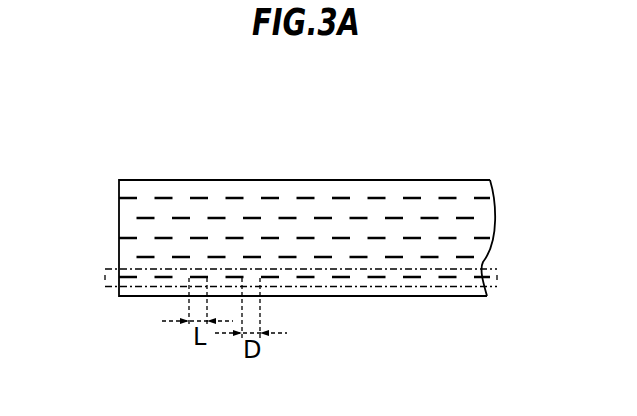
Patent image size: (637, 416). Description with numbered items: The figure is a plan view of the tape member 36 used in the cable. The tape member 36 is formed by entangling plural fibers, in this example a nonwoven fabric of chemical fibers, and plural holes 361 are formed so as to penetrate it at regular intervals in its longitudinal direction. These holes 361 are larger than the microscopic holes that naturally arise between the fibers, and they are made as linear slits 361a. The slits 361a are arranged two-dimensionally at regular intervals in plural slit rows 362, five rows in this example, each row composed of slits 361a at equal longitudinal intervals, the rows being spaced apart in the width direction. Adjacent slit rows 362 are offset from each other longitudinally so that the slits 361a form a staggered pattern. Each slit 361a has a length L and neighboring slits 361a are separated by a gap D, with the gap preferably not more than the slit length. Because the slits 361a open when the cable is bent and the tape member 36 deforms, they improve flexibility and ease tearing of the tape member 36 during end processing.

The tape member 36 is at (132, 145).
The holes 361 is at (230, 199).
The slits 361a is at (335, 198).
The slit rows 362 is at (102, 287).